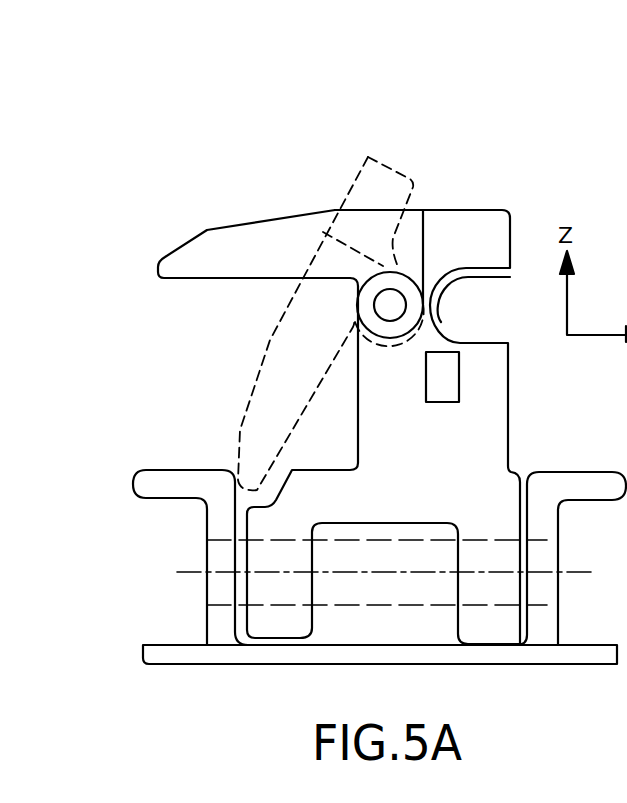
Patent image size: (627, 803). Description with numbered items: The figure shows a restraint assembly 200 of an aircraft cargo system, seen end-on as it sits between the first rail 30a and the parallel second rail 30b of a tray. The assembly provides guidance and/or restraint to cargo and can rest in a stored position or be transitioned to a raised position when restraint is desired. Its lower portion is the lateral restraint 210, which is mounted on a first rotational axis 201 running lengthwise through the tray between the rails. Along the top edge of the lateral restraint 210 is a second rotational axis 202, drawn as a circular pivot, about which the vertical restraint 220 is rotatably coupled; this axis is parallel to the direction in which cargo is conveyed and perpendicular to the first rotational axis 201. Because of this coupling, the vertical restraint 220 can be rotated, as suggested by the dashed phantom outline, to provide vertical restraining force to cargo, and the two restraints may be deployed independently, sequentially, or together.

The restraint assembly 200 is at (166, 178).
The first rotational axis 201 is at (420, 569).
The second rotational axis 202 is at (390, 305).
The lateral restraint 210 is at (483, 398).
The vertical restraint 220 is at (348, 232).
The first rail 30a is at (558, 485).
The second rail 30b is at (152, 482).